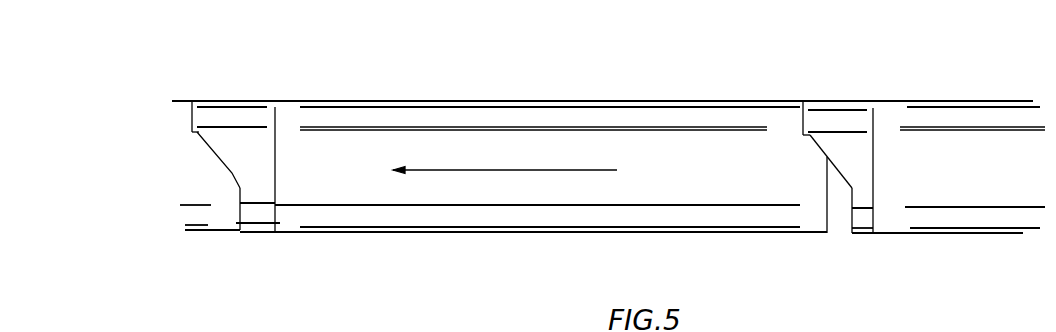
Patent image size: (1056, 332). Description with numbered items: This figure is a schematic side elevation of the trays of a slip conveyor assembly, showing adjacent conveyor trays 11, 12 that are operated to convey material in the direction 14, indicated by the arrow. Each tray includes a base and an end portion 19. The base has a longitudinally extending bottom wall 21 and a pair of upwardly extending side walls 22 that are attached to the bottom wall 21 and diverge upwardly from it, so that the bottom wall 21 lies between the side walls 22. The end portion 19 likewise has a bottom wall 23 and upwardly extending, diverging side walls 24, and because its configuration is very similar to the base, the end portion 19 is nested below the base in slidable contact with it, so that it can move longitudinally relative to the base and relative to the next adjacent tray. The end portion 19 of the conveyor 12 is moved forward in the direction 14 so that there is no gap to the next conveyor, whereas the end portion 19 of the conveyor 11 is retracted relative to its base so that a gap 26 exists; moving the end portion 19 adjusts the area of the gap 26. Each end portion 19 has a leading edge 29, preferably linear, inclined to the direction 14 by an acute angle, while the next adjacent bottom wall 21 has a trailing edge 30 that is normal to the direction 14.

The conveyor tray 11 is at (955, 96).
The conveyor tray 12 is at (590, 237).
The conveying direction 14 is at (580, 170).
The end portion 19 is at (229, 97).
The bottom wall 21 is at (200, 187).
The side walls 22 is at (563, 127).
The bottom wall 23 is at (265, 181).
The side walls 24 is at (243, 126).
The gap 26 is at (835, 220).
The leading edge 29 is at (232, 173).
The trailing edge 30 is at (827, 183).